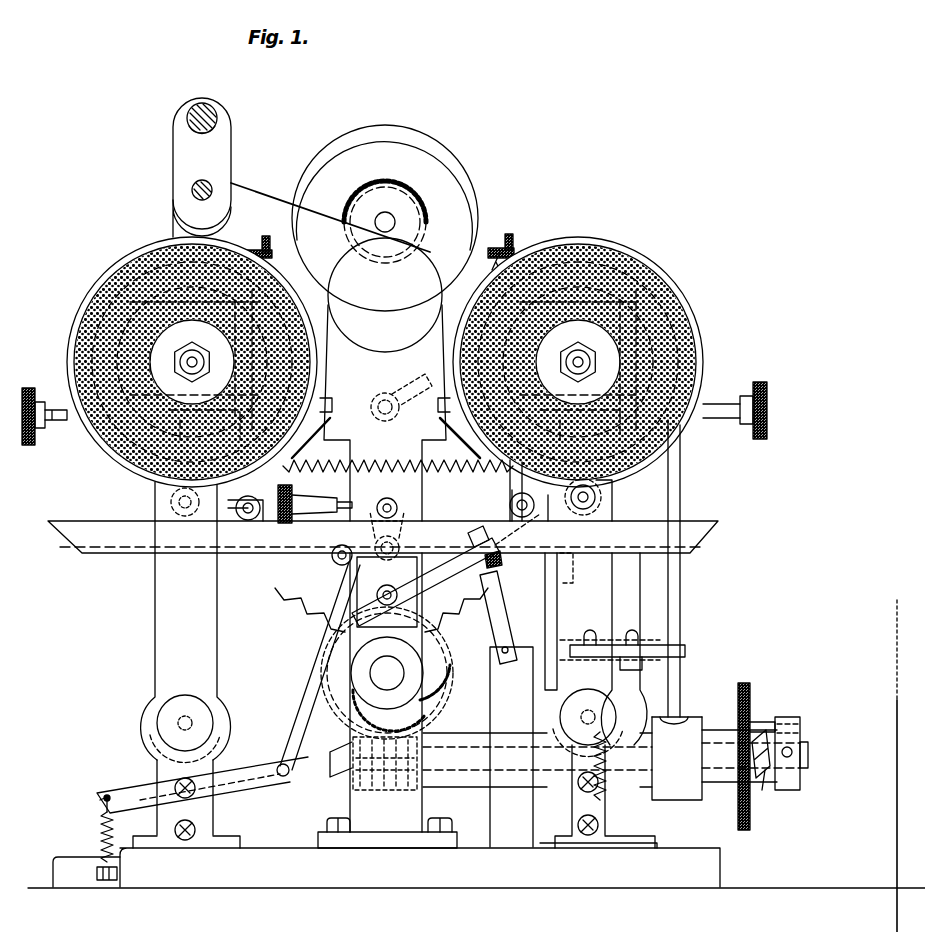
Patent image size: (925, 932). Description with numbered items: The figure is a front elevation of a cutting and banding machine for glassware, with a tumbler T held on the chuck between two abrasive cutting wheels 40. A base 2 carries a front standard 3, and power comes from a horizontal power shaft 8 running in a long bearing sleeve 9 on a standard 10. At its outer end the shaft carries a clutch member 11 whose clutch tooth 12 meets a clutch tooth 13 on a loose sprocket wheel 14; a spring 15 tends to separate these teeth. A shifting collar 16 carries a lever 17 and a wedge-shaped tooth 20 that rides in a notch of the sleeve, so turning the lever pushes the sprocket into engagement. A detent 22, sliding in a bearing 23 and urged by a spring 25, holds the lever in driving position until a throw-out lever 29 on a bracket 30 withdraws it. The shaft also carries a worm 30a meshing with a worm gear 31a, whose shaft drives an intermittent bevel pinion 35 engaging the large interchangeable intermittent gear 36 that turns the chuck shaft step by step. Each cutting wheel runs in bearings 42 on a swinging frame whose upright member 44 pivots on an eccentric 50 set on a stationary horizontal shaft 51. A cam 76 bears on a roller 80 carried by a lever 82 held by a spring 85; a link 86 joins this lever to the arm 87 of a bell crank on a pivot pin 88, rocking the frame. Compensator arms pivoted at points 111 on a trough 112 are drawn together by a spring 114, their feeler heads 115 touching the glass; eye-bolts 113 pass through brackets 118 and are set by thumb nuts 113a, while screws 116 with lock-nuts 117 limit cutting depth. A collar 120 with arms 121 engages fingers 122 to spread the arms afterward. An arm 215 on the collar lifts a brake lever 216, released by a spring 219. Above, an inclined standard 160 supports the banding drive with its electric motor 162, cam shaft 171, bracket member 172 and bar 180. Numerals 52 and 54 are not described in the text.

The base 2 is at (274, 878).
The front standard 3 is at (380, 840).
The power shaft 8 is at (722, 767).
The bearing sleeve 9 is at (457, 780).
The standard 10 is at (552, 613).
The clutch member 11 is at (790, 790).
The clutch tooth 12 is at (776, 722).
The clutch tooth 13 is at (754, 722).
The sprocket wheel 14 is at (740, 690).
The spring 15 is at (763, 778).
The shifting collar 16 is at (672, 796).
The lever 17 is at (683, 462).
The wedge-shaped tooth 20 is at (648, 716).
The detent 22 is at (682, 650).
The bearing 23 is at (632, 662).
The spring 25 is at (614, 626).
The throw-out lever 29 is at (492, 622).
The bracket 30 is at (508, 581).
The worm 30a is at (392, 795).
The worm gear 31a is at (438, 716).
The intermittent bevel pinion 35 is at (355, 668).
The intermittent bevel gear 36 is at (275, 588).
The cutting wheel 40 is at (133, 252).
The bearing 42 is at (90, 292).
The upright member 44 is at (155, 580).
The eccentric 50 is at (140, 744).
The horizontal shaft 51 is at (185, 716).
The slide 52 is at (222, 830).
The slide screws 54 is at (200, 812).
The cam 76 is at (437, 686).
The roller 80 is at (345, 790).
The lever 82 is at (243, 766).
The spring 85 is at (98, 829).
The link 86 is at (290, 712).
The arm 87 is at (338, 549).
The pivot pin 88 is at (405, 552).
The pivot point 111 is at (514, 502).
The trough 112 is at (692, 522).
The eye-bolt 113 is at (505, 238).
The thumb nut 113a is at (285, 242).
The spring 114 is at (422, 464).
The feeler head 115 is at (310, 372).
The screw 116 is at (58, 422).
The lock-nut 117 is at (401, 362).
The bracket 118 is at (552, 238).
The collar 120 is at (386, 395).
The arm 121 is at (358, 494).
The finger 122 is at (379, 397).
The inclined standard 160 is at (255, 200).
The electric motor 162 is at (438, 152).
The cam shaft 171 is at (193, 190).
The bracket member 172 is at (232, 138).
The bar 180 is at (199, 104).
The tumbler T is at (342, 277).
The spring 219 is at (603, 838).
The arm 215 is at (632, 790).
The brake lever 216 is at (528, 678).